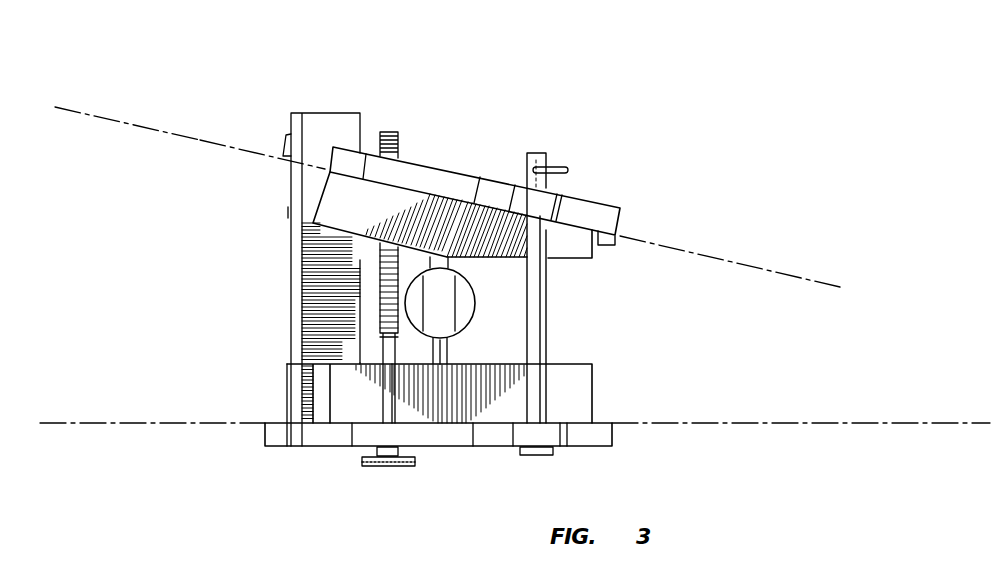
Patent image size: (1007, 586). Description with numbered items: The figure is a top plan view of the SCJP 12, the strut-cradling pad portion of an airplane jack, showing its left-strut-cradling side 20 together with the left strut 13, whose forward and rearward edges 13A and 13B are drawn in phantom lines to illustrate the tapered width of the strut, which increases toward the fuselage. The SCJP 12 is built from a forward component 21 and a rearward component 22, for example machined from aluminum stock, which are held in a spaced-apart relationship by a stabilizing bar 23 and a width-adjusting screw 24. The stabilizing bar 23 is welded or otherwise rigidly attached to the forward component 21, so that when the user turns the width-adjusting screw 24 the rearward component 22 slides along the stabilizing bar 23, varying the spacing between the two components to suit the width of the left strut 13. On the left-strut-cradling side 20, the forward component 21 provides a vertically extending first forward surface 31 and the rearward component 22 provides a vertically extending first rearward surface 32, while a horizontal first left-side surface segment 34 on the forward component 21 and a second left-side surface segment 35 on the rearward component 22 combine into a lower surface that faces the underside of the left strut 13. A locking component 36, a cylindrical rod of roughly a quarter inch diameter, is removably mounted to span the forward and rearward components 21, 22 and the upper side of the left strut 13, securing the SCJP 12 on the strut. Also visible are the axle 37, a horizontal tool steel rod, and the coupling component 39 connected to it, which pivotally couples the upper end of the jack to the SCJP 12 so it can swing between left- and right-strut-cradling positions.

The SCJP 12 is at (607, 131).
The left strut 13 is at (172, 134).
The forward edge 13A is at (172, 425).
The rearward edge 13B is at (253, 148).
The left-strut-cradling side 20 is at (378, 406).
The forward component 21 is at (612, 446).
The rearward component 22 is at (621, 208).
The stabilizing bar 23 is at (318, 120).
The width-adjusting screw 24 is at (388, 132).
The first forward surface 31 is at (604, 422).
The first rearward surface 32 is at (607, 241).
The first left-side surface segment 34 is at (578, 376).
The second left-side surface segment 35 is at (567, 247).
The locking component 36 is at (537, 152).
The axle 37 is at (437, 353).
The coupling component 39 is at (433, 295).